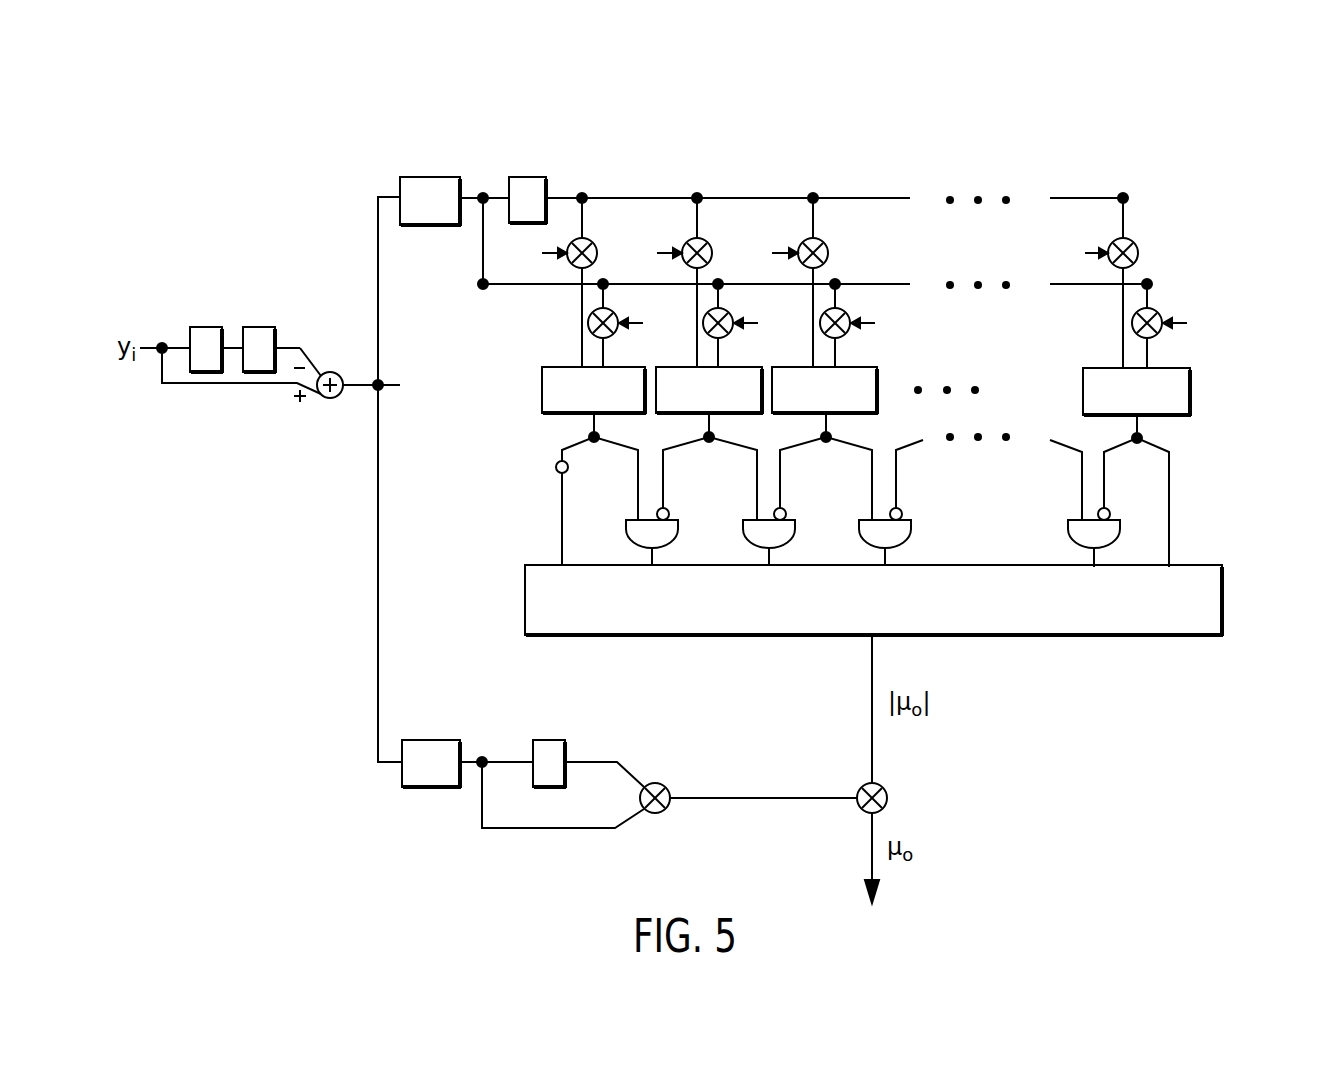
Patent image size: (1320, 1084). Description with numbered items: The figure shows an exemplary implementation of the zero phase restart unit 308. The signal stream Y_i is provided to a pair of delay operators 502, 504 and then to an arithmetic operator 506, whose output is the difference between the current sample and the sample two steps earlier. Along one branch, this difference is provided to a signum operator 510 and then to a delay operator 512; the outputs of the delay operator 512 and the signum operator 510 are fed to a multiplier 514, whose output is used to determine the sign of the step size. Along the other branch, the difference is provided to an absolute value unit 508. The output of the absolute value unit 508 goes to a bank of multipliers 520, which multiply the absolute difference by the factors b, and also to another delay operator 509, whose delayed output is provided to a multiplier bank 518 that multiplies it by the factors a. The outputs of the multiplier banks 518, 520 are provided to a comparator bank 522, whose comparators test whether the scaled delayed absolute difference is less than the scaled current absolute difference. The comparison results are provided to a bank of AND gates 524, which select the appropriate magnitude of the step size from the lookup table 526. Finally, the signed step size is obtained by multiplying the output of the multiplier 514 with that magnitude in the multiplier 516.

The zero phase restart unit 308 is at (1000, 127).
The delay operator 502 is at (208, 325).
The delay operator 504 is at (259, 328).
The arithmetic operator 506 is at (331, 398).
The absolute value unit 508 is at (428, 176).
The delay operator 509 is at (527, 176).
The signum operator 510 is at (425, 740).
The delay operator 512 is at (555, 740).
The multiplier 514 is at (663, 785).
The multiplier 516 is at (889, 800).
The multiplier bank 518 is at (1153, 245).
The bank of multipliers 520 is at (1218, 306).
The comparator bank 522 is at (1205, 392).
The bank of AND gates 524 is at (1185, 495).
The lookup table 526 is at (1063, 636).